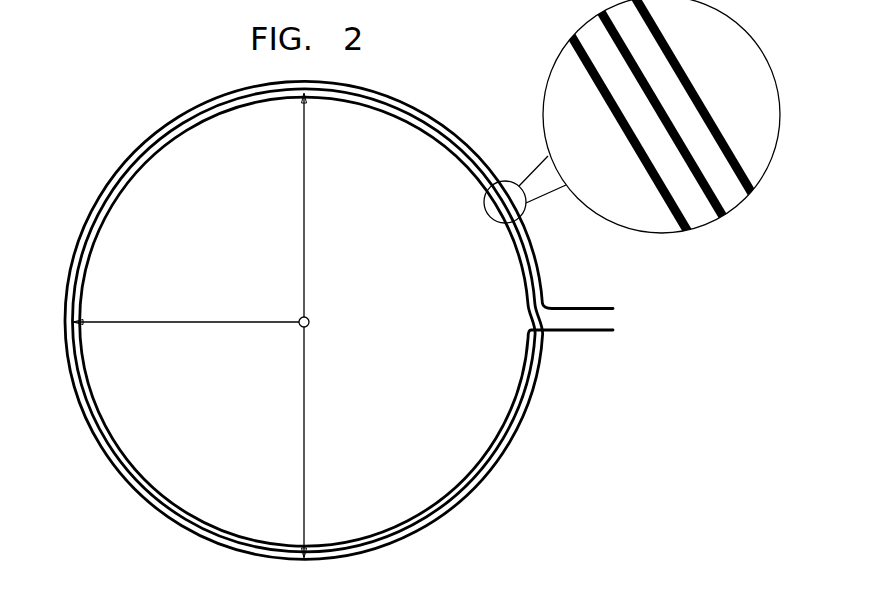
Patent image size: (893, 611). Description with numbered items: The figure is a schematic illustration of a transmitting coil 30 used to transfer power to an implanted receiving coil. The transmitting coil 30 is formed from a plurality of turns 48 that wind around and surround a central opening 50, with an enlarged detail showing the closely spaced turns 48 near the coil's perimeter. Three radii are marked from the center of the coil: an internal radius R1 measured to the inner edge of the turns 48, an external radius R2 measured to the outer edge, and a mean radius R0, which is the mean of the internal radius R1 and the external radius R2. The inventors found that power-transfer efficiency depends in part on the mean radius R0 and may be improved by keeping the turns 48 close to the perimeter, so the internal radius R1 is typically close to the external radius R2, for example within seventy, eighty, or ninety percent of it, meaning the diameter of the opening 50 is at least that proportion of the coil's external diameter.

The transmitting coil 30 is at (150, 134).
The turns 48 is at (771, 203).
The opening 50 is at (433, 338).
The mean radius R0 is at (193, 320).
The internal radius R1 is at (304, 208).
The external radius R2 is at (304, 437).